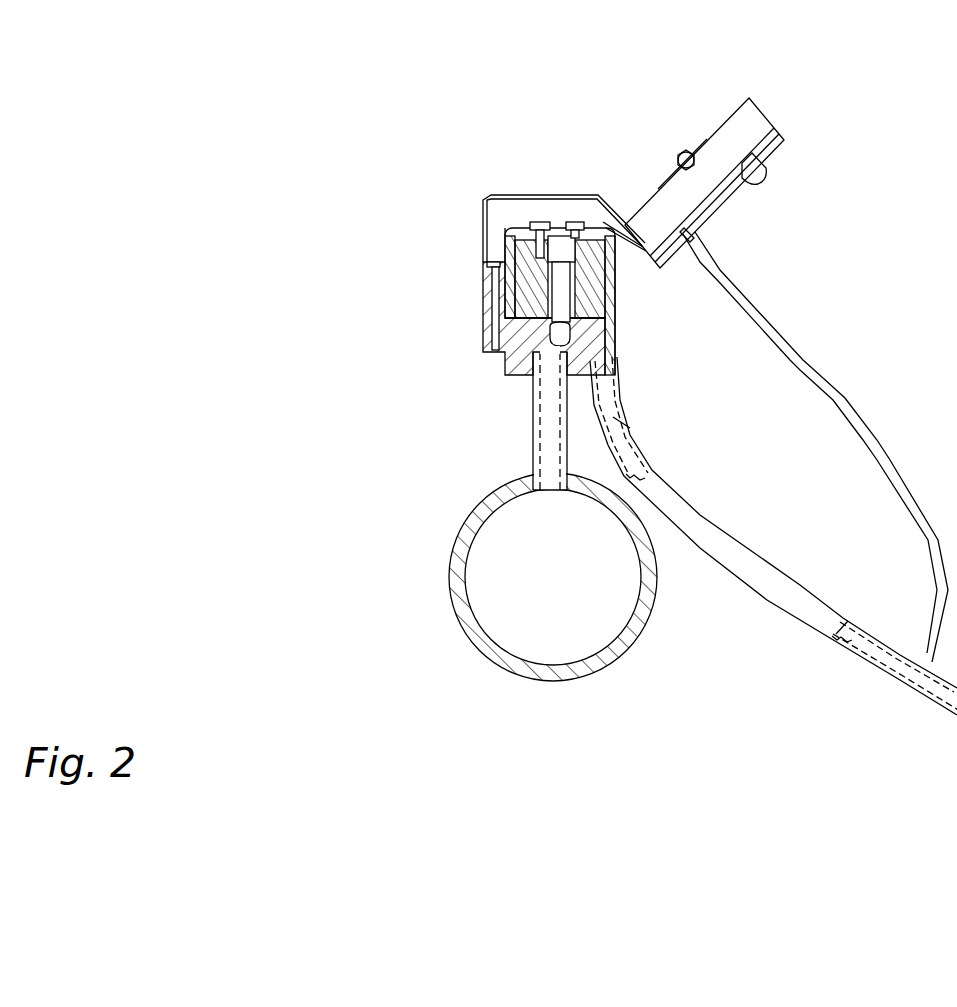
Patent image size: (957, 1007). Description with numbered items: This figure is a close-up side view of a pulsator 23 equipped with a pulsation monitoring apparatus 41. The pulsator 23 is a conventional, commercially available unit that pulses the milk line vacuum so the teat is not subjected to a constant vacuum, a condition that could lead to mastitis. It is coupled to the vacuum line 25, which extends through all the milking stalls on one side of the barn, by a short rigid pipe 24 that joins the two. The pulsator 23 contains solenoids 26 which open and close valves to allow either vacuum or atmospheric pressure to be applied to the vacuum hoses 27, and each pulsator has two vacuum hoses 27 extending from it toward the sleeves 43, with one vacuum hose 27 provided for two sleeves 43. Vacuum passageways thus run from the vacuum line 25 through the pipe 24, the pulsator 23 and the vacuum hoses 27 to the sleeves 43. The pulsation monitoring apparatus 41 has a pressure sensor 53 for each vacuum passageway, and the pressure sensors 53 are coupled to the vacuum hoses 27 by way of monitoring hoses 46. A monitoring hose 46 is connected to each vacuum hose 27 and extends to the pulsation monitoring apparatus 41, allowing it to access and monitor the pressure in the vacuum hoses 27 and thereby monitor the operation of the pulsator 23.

The pulsation monitoring apparatus 41 is at (733, 113).
The sleeves 43 is at (598, 224).
The pulsator 23 is at (608, 282).
The solenoids 26 is at (540, 292).
The pipe 24 is at (532, 430).
The vacuum line 25 is at (452, 578).
The vacuum hoses 27 is at (800, 586).
The monitoring hoses 46 is at (830, 388).
The pressure sensor 53 is at (693, 233).